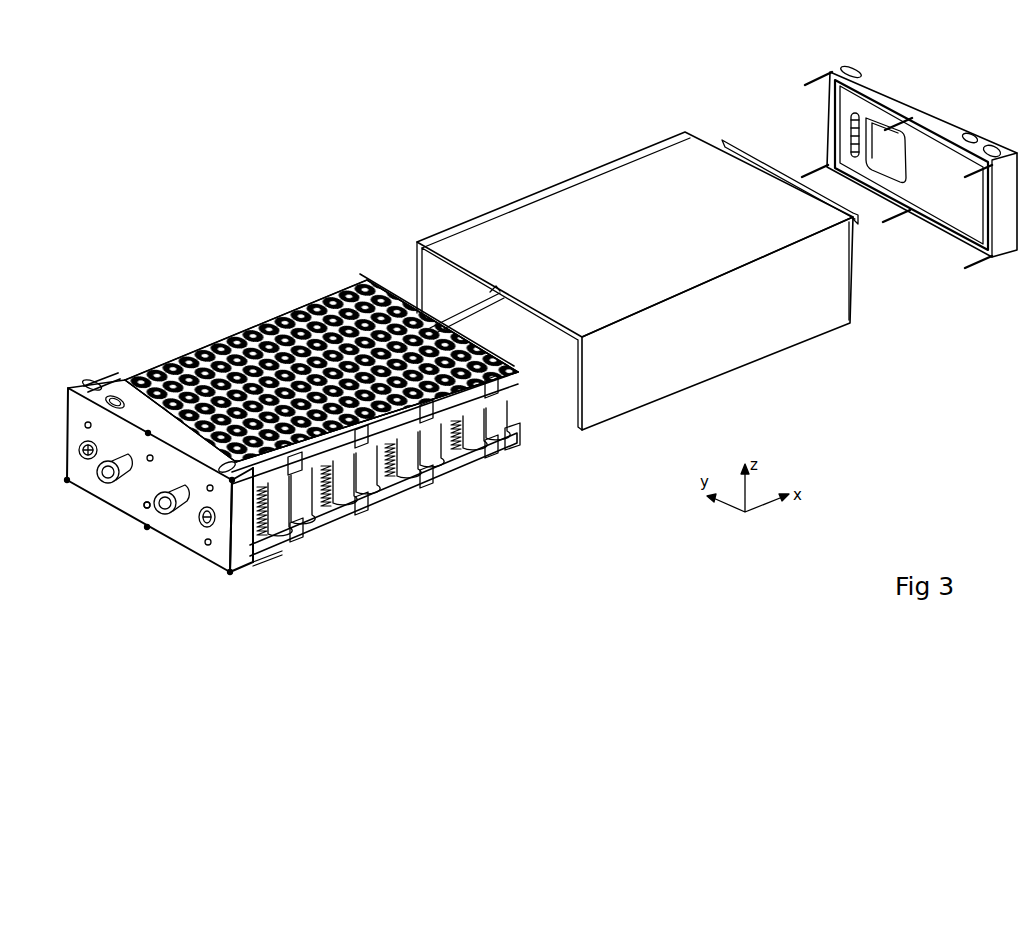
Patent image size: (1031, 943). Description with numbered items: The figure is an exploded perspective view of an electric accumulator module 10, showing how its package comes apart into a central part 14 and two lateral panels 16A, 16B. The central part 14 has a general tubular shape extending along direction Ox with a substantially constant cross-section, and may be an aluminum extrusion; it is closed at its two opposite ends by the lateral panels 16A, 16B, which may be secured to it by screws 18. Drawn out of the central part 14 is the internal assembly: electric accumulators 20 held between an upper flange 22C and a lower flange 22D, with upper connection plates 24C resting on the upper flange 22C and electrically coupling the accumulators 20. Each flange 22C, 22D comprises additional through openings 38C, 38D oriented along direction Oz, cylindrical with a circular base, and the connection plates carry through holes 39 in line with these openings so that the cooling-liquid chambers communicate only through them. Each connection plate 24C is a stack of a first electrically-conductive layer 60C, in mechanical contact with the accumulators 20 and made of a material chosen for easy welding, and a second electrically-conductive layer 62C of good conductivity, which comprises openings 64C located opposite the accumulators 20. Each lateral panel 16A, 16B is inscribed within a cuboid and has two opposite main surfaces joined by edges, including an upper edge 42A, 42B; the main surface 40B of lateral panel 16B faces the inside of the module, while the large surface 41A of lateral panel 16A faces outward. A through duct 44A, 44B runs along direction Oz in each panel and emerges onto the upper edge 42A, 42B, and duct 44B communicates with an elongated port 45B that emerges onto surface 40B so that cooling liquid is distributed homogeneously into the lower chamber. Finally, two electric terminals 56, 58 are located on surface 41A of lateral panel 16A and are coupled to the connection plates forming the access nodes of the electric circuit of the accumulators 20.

The electric accumulator module 10 is at (340, 105).
The central part 14 is at (590, 182).
The lateral panel 16A is at (244, 560).
The lateral panel 16B is at (890, 95).
The screws 18 is at (210, 490).
The electric accumulators 20 is at (272, 520).
The upper flange 22C is at (297, 302).
The lower flange 22D is at (383, 497).
The upper connection plates 24C is at (182, 352).
The additional through openings 38C is at (387, 430).
The additional through openings 38D is at (297, 527).
The through holes 39 is at (433, 413).
The main surface 40B is at (930, 197).
The main surface 41A is at (208, 557).
The upper edge 42A is at (131, 410).
The upper edge 42B is at (910, 105).
The through duct 44A is at (100, 380).
The through duct 44B is at (962, 137).
The elongated port 45B is at (875, 182).
The electric terminal 56 is at (120, 477).
The electric terminal 58 is at (147, 508).
The first electrically-conductive layer 60C is at (230, 337).
The second electrically-conductive layer 62C is at (158, 363).
The openings 64C is at (263, 320).